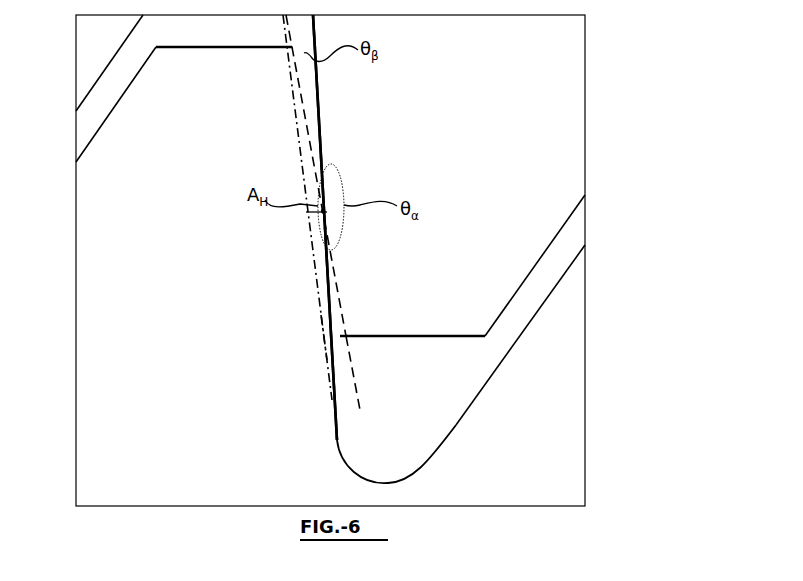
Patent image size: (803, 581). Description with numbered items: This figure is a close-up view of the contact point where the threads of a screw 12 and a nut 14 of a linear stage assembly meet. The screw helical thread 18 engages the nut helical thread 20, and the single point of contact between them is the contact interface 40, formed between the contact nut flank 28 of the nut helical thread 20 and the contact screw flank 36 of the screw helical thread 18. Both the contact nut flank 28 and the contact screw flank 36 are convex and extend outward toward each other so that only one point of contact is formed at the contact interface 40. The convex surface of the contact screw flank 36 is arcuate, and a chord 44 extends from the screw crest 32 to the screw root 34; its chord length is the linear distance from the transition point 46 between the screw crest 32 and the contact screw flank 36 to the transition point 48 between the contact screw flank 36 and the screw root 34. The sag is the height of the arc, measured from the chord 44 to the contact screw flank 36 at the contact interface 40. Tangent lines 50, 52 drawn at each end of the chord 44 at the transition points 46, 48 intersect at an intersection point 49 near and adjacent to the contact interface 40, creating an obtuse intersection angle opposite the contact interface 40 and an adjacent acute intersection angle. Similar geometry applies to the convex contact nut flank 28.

The screw 12 is at (100, 425).
The nut 14 is at (577, 56).
The screw helical thread 18 is at (107, 216).
The nut helical thread 20 is at (558, 182).
The contact nut flank 28 is at (333, 288).
The screw crest 32 is at (223, 48).
The screw root 34 is at (384, 481).
The contact screw flank 36 is at (326, 344).
The contact interface 40 is at (330, 205).
The chord 44 is at (316, 277).
The transition point 46 is at (303, 48).
The transition point 48 is at (337, 447).
The intersection point 49 is at (342, 224).
The tangent line 50 is at (335, 397).
The tangent line 52 is at (352, 363).